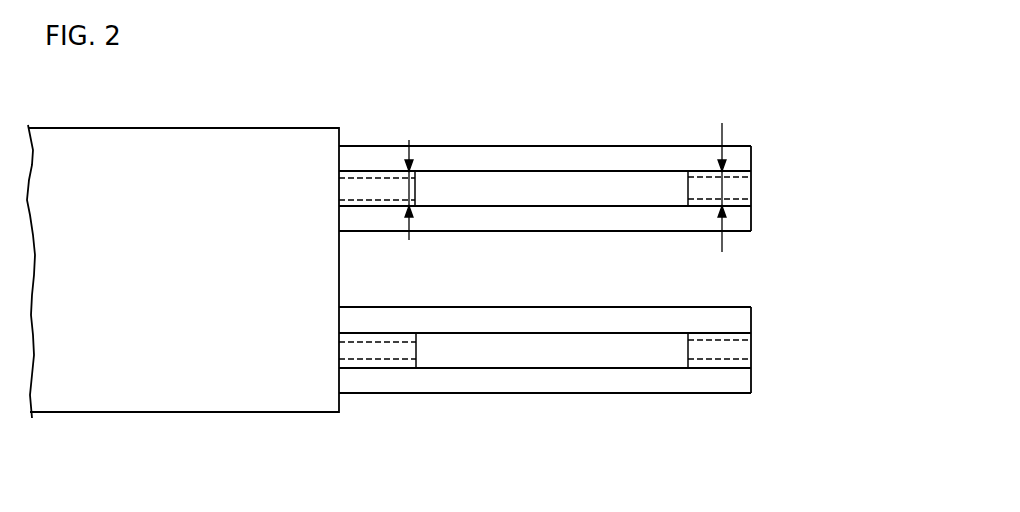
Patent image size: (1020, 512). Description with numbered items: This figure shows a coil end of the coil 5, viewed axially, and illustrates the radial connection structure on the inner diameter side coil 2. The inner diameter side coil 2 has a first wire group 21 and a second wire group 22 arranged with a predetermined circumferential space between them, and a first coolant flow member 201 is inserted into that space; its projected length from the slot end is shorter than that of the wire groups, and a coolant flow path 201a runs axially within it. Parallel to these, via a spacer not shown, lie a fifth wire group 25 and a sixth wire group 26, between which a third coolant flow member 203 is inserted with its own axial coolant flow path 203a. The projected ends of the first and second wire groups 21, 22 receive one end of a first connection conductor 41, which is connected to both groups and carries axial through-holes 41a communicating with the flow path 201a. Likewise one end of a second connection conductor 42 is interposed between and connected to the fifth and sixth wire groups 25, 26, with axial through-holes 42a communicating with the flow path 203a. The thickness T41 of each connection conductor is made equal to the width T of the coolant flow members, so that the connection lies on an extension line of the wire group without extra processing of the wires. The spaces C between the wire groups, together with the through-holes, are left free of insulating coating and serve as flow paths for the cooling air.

The coil 5 is at (183, 303).
The inner diameter side coil 2 is at (249, 403).
The first wire group 21 is at (580, 158).
The second wire group 22 is at (581, 222).
The first coolant flow member 201 is at (442, 169).
The coolant flow path 201a is at (416, 187).
The first connection conductor 41 is at (776, 186).
The axial through-holes 41a is at (743, 188).
The width of coolant flow member T is at (403, 187).
The thickness of connection conductor T41 is at (720, 187).
The spaces between wire groups C is at (518, 182).
The fifth wire group 25 is at (502, 323).
The sixth wire group 26 is at (502, 385).
The third coolant flow member 203 is at (442, 402).
The coolant flow path 203a is at (410, 351).
The second connection conductor 42 is at (776, 354).
The axial through-holes 42a is at (743, 350).